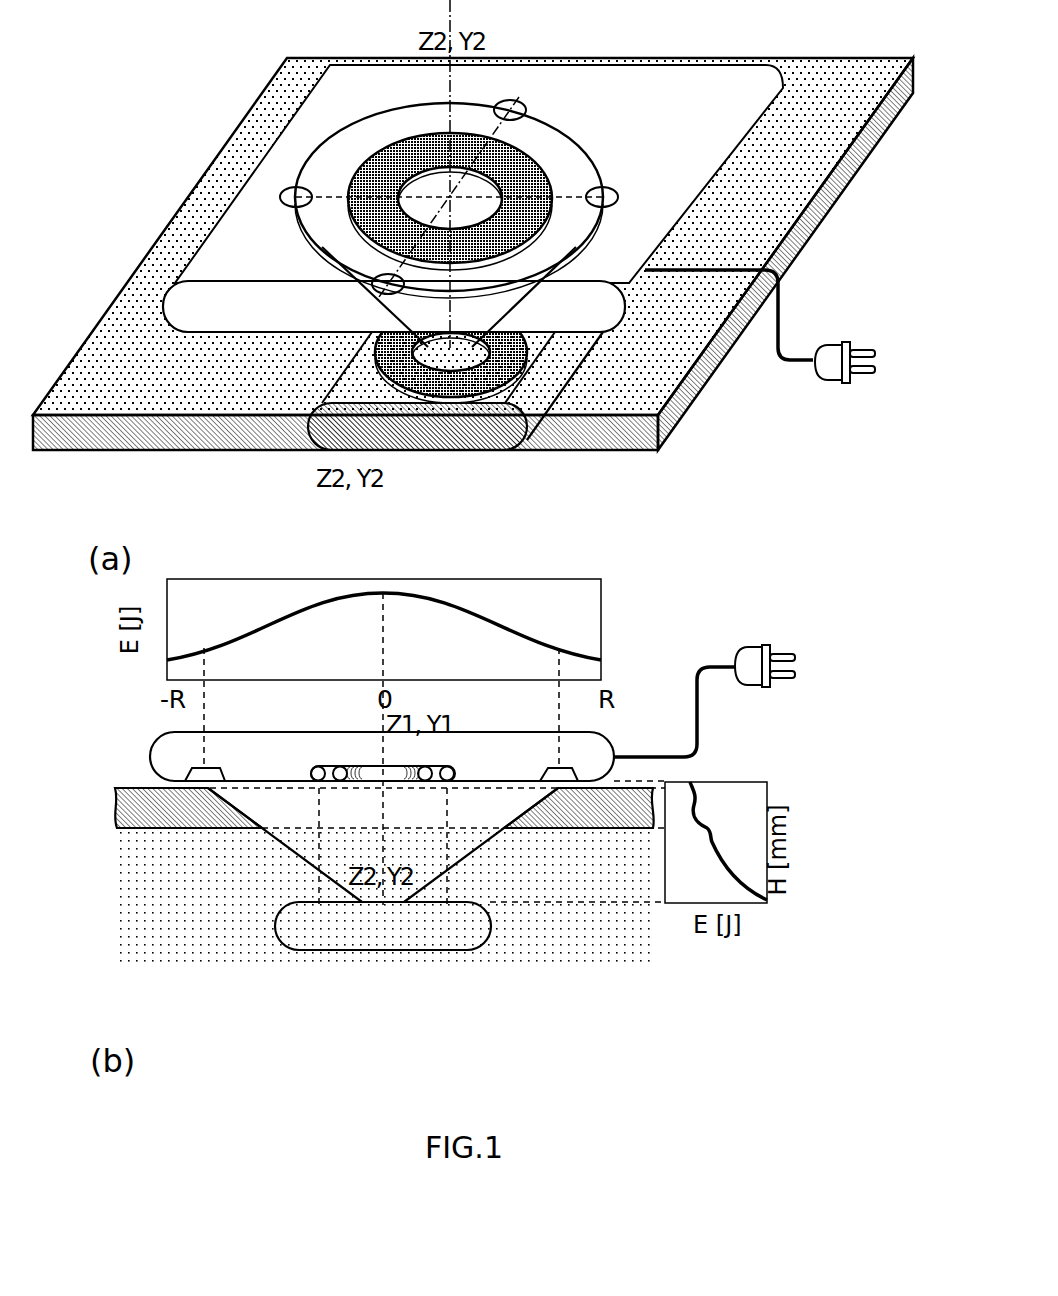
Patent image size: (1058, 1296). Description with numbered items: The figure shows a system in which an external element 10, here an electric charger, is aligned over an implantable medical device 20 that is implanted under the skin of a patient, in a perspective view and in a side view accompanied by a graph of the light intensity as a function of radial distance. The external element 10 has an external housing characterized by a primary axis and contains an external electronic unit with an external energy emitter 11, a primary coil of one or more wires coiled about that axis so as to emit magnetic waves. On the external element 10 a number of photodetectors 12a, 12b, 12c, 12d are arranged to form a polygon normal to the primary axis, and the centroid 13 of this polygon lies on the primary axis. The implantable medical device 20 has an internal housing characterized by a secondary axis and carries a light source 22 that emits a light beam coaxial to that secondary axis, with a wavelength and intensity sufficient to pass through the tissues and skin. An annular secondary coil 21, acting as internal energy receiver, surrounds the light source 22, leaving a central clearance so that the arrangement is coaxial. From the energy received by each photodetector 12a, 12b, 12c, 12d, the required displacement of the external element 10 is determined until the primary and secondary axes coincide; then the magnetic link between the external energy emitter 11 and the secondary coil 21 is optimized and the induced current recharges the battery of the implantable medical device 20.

The external element 10 is at (165, 222).
The external energy emitter 11 is at (530, 157).
The photodetector 12a is at (290, 188).
The photodetector 12b is at (510, 100).
The photodetector 12c is at (603, 190).
The photodetector 12d is at (382, 290).
The centroid 13 is at (437, 137).
The implantable medical device 20 is at (302, 443).
The secondary coil 21 is at (553, 383).
The light source 22 is at (457, 362).